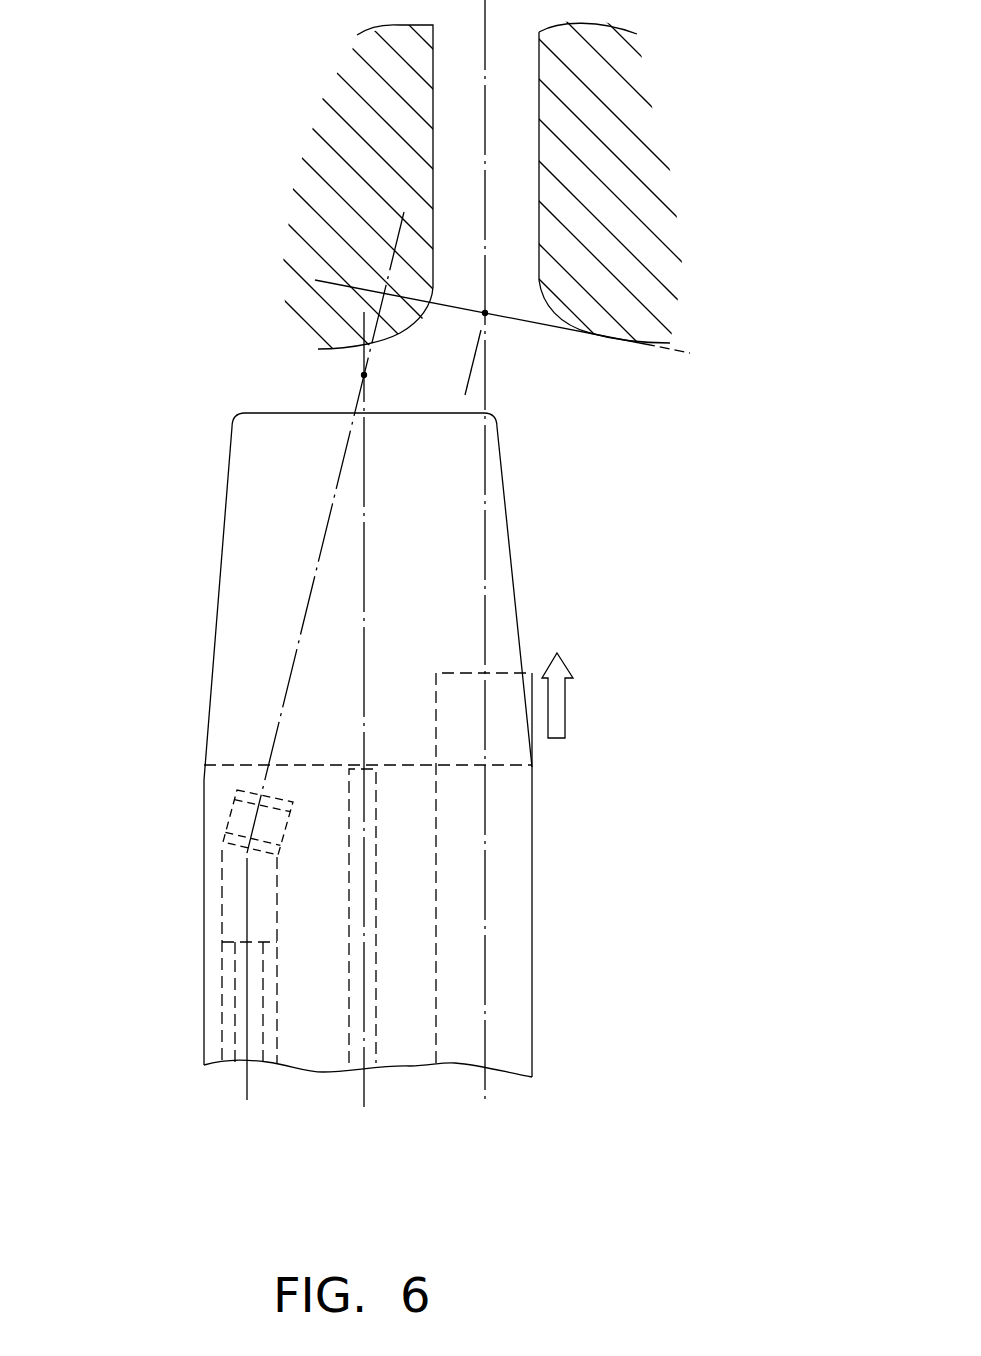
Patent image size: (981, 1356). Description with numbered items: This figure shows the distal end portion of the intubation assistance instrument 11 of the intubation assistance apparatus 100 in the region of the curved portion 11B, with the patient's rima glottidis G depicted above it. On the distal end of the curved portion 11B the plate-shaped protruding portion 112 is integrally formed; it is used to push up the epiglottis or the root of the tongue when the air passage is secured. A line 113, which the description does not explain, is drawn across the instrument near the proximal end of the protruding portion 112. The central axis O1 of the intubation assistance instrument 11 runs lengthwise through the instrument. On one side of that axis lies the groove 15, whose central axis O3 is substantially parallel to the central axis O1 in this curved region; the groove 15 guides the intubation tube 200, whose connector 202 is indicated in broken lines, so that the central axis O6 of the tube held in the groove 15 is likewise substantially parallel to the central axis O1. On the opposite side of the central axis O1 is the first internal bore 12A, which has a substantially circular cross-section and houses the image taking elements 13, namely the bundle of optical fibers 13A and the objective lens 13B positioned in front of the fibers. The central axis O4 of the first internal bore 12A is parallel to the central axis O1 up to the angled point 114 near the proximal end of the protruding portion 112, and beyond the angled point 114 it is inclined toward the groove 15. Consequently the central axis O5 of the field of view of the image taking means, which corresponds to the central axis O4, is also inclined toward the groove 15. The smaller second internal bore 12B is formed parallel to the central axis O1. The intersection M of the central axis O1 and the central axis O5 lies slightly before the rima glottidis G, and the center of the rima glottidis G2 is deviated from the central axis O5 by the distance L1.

The intubation assistance apparatus 100 is at (637, 503).
The intubation assistance instrument 11 is at (204, 1061).
The curved portion 11B is at (217, 1023).
The protruding portion 112 is at (248, 542).
The boundary line 113 is at (243, 765).
The angled point 114 is at (258, 866).
The first internal bore 12A is at (220, 918).
The second internal bore 12B is at (378, 1015).
The tip portion 13 is at (155, 926).
The bundle of optical fibers 13A is at (233, 983).
The objective lens 13B is at (237, 790).
The groove 15 is at (435, 1000).
The intubation tube 200 is at (505, 650).
The connector 202 is at (539, 820).
The rima glottidis G is at (523, 352).
The center of the rima glottidis G2 is at (490, 311).
The intersection M is at (348, 374).
The distance L1 is at (470, 376).
The central axis of the intubation assistance instrument O1 is at (366, 1048).
The central axis of the groove O3 is at (483, 1052).
The central axis of the first internal bore O4 is at (247, 1083).
The central axis of the field of view O5 is at (229, 1018).
The central axis of the intubation tube O6 is at (531, 573).